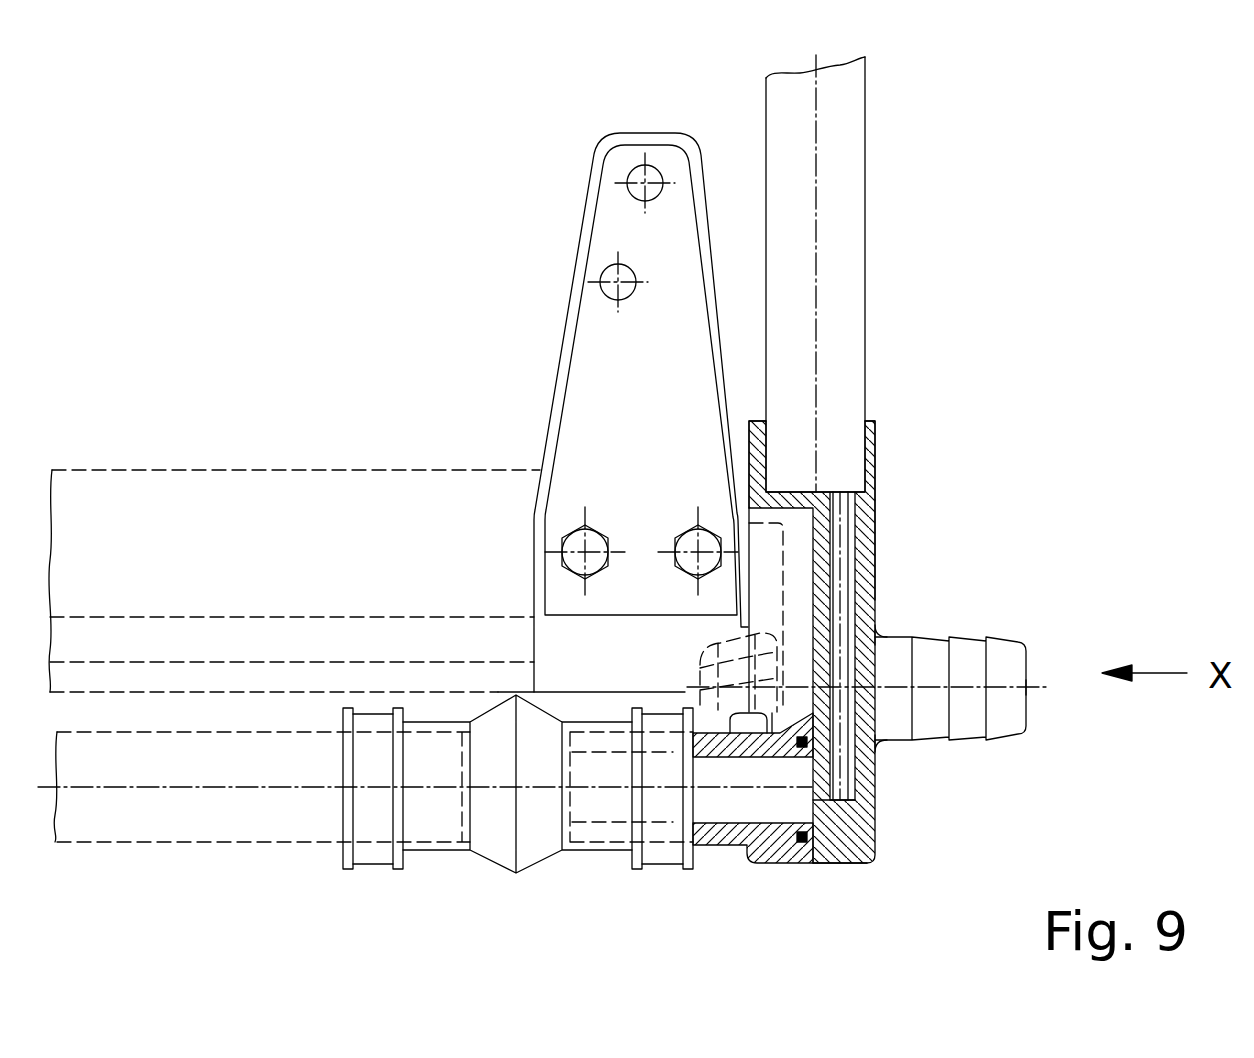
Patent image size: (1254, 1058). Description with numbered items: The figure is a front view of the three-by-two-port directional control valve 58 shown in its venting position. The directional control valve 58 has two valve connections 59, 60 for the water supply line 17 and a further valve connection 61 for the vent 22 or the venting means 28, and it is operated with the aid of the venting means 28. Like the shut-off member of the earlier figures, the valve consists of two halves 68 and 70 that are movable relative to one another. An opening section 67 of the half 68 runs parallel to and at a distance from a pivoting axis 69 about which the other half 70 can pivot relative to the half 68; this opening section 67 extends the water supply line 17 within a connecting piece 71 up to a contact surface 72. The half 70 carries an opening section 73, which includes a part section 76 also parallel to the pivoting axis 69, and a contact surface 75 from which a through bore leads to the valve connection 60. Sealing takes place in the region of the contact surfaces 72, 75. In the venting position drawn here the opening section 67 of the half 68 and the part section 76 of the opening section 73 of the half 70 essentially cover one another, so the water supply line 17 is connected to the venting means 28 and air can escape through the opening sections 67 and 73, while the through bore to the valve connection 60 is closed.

The water supply line 17 is at (280, 810).
The vent 22 is at (900, 273).
The venting means 28 is at (843, 299).
The directional control valve 58 is at (955, 532).
The valve connection 59 is at (733, 822).
The valve connection 60 is at (1002, 660).
The valve connection 61 is at (868, 440).
The opening section 67 is at (770, 798).
The half 68 is at (875, 742).
The pivoting axis 69 is at (1030, 690).
The half 70 is at (862, 552).
The connecting piece 71 is at (713, 833).
The contact surface 72 is at (932, 646).
The opening section 73 is at (875, 638).
The contact surface 75 is at (818, 615).
The part section 76 is at (827, 800).